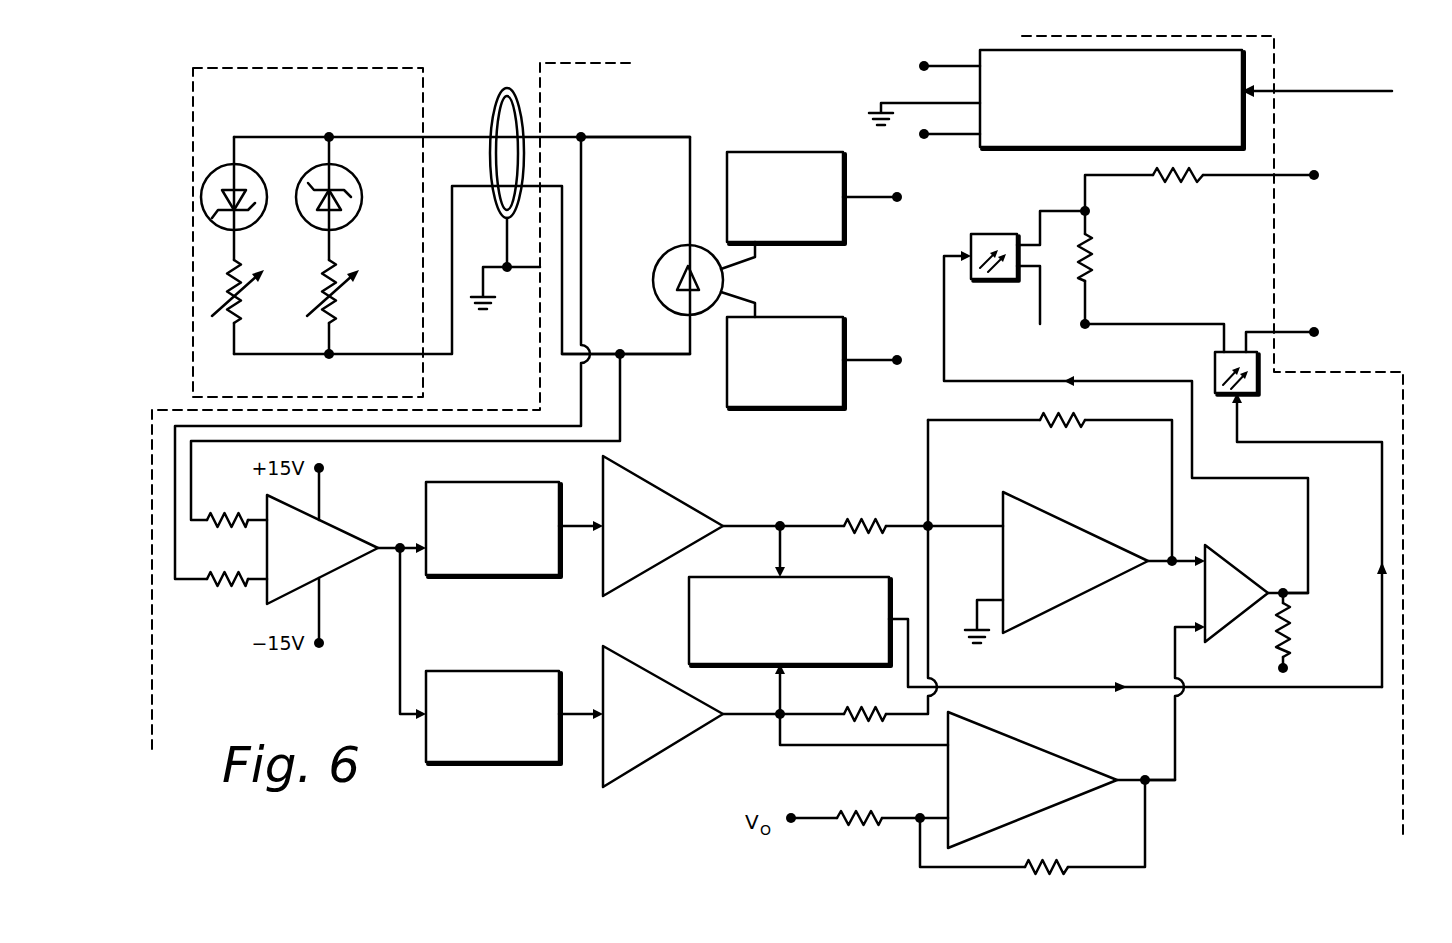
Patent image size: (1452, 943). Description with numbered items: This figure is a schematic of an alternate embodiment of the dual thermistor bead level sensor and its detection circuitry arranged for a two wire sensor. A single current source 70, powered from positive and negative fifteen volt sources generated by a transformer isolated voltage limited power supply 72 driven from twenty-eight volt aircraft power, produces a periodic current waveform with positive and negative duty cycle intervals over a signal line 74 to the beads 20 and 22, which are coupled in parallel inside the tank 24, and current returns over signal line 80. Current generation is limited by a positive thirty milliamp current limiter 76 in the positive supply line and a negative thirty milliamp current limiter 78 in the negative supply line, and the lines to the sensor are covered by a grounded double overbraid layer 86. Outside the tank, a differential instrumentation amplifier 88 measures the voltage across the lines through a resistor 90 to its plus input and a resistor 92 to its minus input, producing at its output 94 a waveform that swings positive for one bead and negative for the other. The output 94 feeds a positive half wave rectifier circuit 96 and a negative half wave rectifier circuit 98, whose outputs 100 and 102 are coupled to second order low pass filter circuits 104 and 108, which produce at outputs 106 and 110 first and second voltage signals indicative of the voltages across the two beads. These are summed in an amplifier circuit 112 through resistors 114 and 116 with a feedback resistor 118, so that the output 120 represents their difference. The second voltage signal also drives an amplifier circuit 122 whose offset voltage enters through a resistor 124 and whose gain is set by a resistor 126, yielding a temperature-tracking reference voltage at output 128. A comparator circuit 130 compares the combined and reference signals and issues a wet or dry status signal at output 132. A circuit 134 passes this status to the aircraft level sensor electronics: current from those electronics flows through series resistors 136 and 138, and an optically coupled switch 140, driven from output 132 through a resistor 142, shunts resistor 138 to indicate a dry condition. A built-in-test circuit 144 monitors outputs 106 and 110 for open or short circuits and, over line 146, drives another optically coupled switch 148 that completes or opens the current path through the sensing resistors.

The bead 20 is at (226, 290).
The bead 22 is at (340, 310).
The tank 24 is at (193, 340).
The current source 70 is at (725, 279).
The transformer isolated voltage limited power supply 72 is at (1040, 147).
The signal line 74 is at (645, 137).
The +30 ma RMS current limiter 76 is at (785, 152).
The −30 ma RMS current limiter 78 is at (845, 337).
The signal line 80 is at (660, 354).
The grounded double overbraid layer 86 is at (497, 118).
The differential instrumentation amplifier 88 is at (346, 568).
The resistor 90 is at (223, 508).
The resistor 92 is at (232, 590).
The output 94 is at (398, 540).
The positive ½ wave rectifier circuit 96 is at (495, 575).
The negative ½ wave rectifier circuit 98 is at (495, 762).
The output 100 is at (584, 528).
The output 102 is at (584, 716).
The second order low pass filter circuit 104 is at (680, 490).
The output 106 is at (782, 522).
The second order low pass filter circuit 108 is at (645, 770).
The output 110 is at (778, 720).
The amplifier circuit 112 is at (1078, 525).
The resistor 114 is at (868, 515).
The resistor 116 is at (862, 712).
The resistor 118 is at (1062, 425).
The output 120 is at (1165, 568).
The amplifier circuit 122 is at (1063, 752).
The resistor 124 is at (858, 830).
The resistor 126 is at (1068, 862).
The output 128 is at (1150, 787).
The comparator circuit 130 is at (1240, 568).
The output 132 is at (1290, 597).
The circuit 134 is at (1205, 262).
The resistor 136 is at (1180, 178).
The resistor 138 is at (1095, 262).
The optically coupled switch 140 is at (994, 281).
The resistor 142 is at (1295, 630).
The built-in-test circuit 144 is at (689, 615).
The line 146 is at (1068, 685).
The optically coupled switch 148 is at (1215, 370).